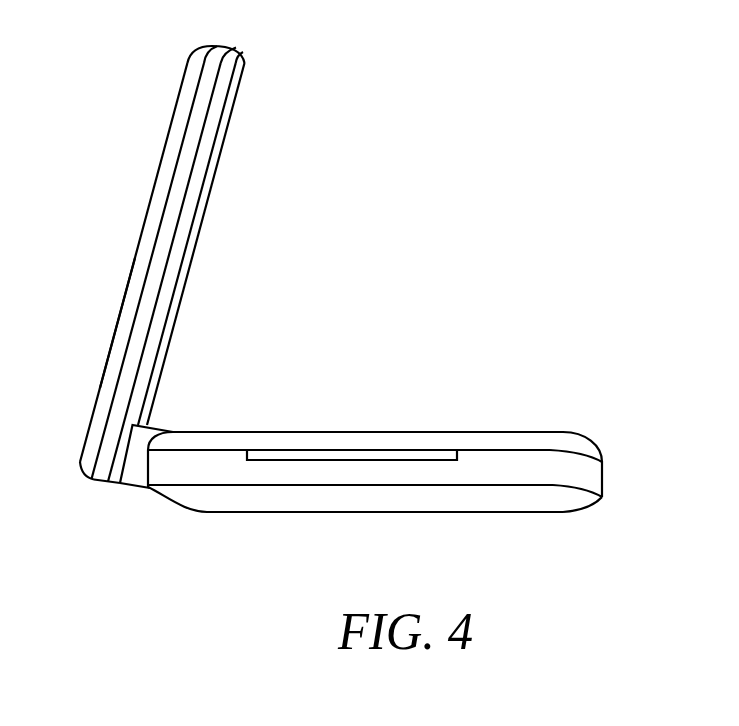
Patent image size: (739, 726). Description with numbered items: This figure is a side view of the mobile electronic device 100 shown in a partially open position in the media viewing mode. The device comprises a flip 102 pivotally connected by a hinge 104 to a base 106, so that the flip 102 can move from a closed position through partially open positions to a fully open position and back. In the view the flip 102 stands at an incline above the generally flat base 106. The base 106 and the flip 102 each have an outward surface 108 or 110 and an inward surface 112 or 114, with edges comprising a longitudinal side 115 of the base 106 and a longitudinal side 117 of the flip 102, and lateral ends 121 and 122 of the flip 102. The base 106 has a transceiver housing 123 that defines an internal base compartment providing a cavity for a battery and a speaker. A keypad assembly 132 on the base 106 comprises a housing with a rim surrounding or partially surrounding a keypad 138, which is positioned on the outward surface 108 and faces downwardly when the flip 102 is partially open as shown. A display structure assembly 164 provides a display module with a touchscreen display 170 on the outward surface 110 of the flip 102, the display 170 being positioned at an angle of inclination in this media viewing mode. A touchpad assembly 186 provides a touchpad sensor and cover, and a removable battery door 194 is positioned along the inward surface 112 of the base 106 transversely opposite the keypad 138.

The mobile electronic device 100 is at (527, 233).
The flip 102 is at (210, 45).
The hinge 104 is at (123, 486).
The base 106 is at (603, 472).
The outward surface of the base 108 is at (530, 513).
The outward surface of the flip 110 is at (176, 106).
The inward surface of the base 112 is at (515, 430).
The inward surface of the flip 114 is at (228, 126).
The longitudinal side of the base 115 is at (603, 498).
The longitudinal side of the flip 117 is at (91, 483).
The lateral end of the flip 121 is at (155, 245).
The lateral end of the flip 122 is at (212, 448).
The transceiver housing 123 is at (148, 489).
The keypad assembly 132 is at (228, 513).
The keypad 138 is at (297, 513).
The display structure assembly 164 is at (188, 62).
The touchscreen display 170 is at (127, 287).
The touchpad assembly 186 is at (200, 230).
The removable battery door 194 is at (337, 430).